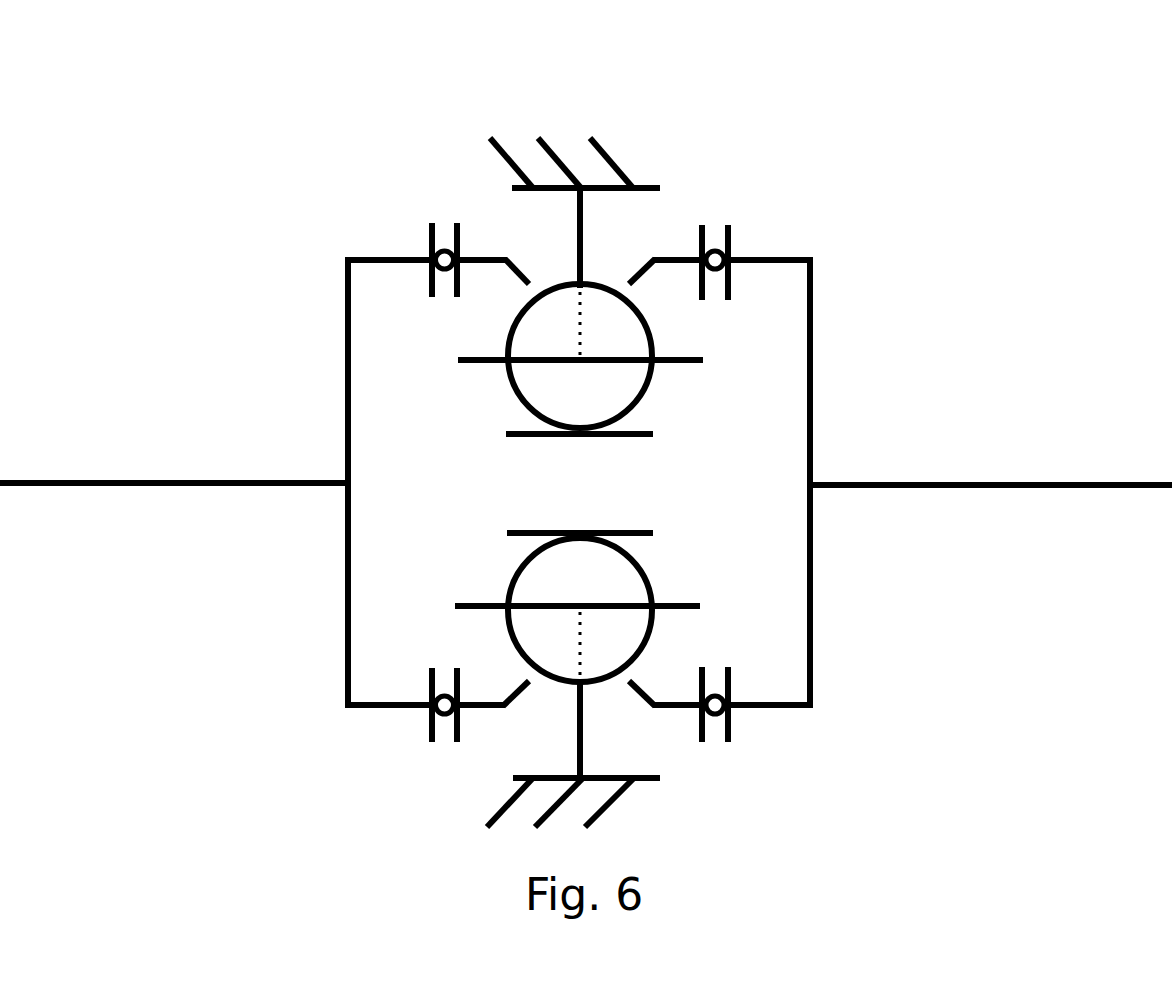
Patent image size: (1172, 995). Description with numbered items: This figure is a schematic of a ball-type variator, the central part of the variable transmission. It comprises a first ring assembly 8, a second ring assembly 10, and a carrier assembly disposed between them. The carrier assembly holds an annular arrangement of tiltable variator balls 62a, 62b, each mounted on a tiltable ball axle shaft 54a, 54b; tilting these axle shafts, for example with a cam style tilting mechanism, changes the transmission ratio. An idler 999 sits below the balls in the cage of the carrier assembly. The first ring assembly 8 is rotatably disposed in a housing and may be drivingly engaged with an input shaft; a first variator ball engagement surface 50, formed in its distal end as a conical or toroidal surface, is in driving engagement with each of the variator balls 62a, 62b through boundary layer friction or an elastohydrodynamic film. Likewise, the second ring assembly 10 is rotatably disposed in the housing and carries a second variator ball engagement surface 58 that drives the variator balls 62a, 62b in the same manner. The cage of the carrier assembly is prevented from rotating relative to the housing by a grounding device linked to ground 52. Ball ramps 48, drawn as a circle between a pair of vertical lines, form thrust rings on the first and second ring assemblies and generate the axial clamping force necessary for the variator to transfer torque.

The second ring assembly 10 is at (376, 192).
The first ring assembly 8 is at (733, 157).
The ground 52 is at (490, 138).
The first variator ball engagement surface 50 is at (640, 265).
The ball ramps 48 is at (729, 223).
The second variator ball engagement surface 58 is at (527, 283).
The variator ball 62a is at (655, 333).
The ball axle shaft 54a is at (692, 365).
The idler 999 is at (625, 438).
The ball axle shaft 54b is at (696, 600).
The variator ball 62b is at (647, 643).